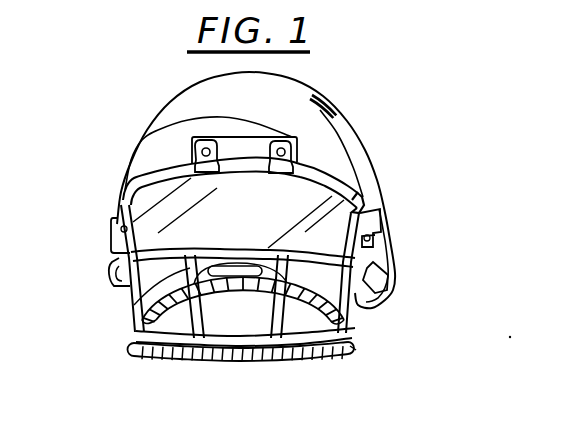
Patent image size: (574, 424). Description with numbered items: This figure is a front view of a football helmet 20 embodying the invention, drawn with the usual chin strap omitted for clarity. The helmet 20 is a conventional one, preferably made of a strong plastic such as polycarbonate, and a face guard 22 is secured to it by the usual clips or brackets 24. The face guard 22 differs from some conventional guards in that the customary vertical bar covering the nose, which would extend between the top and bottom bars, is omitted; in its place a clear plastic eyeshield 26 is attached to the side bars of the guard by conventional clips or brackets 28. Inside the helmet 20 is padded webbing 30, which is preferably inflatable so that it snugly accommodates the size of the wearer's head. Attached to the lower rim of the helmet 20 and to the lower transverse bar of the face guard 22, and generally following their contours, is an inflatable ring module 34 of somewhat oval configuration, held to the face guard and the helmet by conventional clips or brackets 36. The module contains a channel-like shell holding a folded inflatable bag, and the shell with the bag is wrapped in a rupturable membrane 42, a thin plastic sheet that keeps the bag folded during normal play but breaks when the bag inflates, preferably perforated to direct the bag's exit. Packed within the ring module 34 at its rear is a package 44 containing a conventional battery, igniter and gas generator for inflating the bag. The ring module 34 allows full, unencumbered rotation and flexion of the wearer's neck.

The football helmet 20 is at (362, 142).
The face guard 22 is at (389, 281).
The clips or brackets 24 is at (272, 150).
The eyeshield 26 is at (372, 186).
The clips or brackets 28 is at (112, 227).
The padded webbing 30 is at (240, 275).
The inflatable ring module 34 is at (354, 356).
The clips or brackets 36 is at (313, 358).
The rupturable membrane 42 is at (177, 356).
The package 44 is at (125, 292).